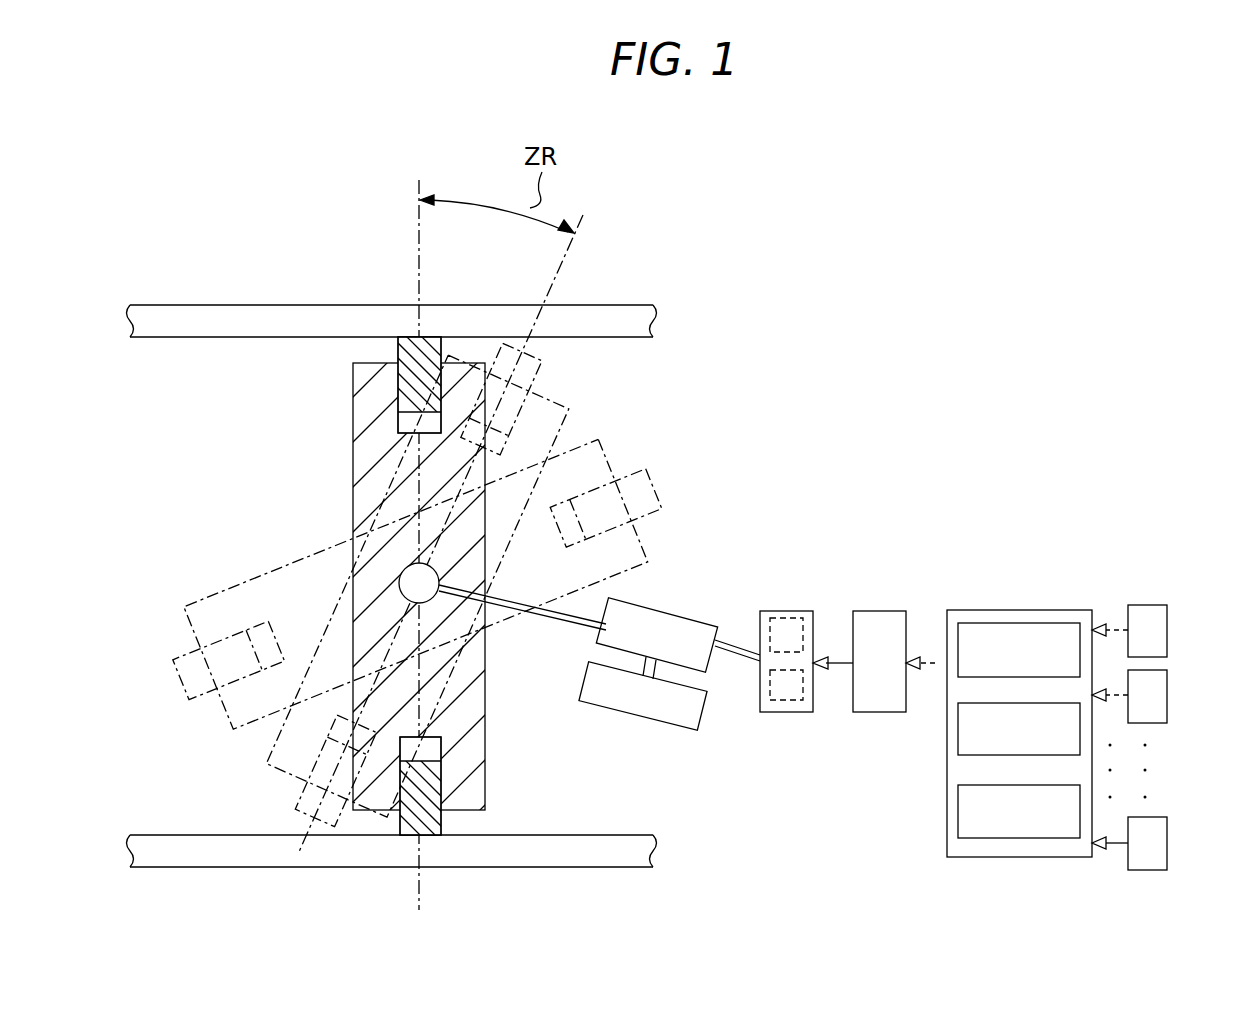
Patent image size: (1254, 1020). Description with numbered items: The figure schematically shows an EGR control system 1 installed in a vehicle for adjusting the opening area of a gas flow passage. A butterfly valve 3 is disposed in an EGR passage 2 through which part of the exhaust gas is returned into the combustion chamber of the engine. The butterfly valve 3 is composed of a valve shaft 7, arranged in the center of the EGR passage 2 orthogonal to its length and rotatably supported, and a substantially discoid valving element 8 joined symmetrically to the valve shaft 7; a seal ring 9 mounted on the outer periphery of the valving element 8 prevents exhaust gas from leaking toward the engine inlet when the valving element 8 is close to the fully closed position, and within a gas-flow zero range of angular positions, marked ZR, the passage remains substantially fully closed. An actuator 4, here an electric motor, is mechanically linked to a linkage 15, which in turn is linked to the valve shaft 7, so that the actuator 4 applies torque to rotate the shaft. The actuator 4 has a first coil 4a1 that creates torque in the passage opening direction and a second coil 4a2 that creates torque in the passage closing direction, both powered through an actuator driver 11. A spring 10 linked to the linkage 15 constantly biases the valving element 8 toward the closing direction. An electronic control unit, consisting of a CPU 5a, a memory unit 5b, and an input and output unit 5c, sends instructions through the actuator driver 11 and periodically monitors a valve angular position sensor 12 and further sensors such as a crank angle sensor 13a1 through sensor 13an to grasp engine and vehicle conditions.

The EGR control system 1 is at (924, 450).
The EGR passage 2 is at (213, 362).
The butterfly valve 3 is at (265, 392).
The actuator 4 is at (787, 660).
The first coil 4a1 is at (790, 618).
The second coil 4a2 is at (780, 702).
The CPU 5a is at (1040, 624).
The memory unit 5b is at (960, 730).
The input and output unit 5c is at (960, 818).
The valve shaft 7 is at (405, 572).
The valving element 8 is at (363, 445).
The seal ring 9 is at (415, 338).
The spring 10 is at (665, 728).
The actuator driver 11 is at (878, 710).
The valve angular position sensor 12 is at (1153, 633).
The crank angle sensor 13a1 is at (1153, 700).
The sensors 13an is at (1153, 850).
The linkage 15 is at (697, 612).